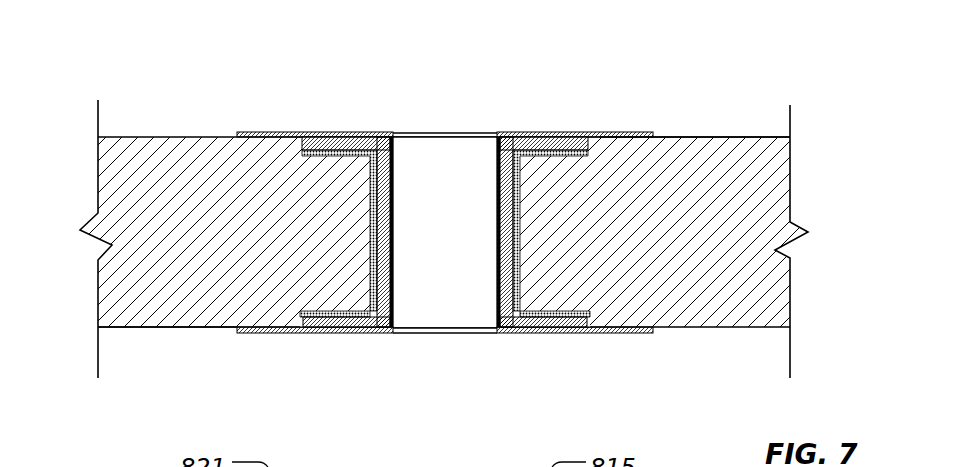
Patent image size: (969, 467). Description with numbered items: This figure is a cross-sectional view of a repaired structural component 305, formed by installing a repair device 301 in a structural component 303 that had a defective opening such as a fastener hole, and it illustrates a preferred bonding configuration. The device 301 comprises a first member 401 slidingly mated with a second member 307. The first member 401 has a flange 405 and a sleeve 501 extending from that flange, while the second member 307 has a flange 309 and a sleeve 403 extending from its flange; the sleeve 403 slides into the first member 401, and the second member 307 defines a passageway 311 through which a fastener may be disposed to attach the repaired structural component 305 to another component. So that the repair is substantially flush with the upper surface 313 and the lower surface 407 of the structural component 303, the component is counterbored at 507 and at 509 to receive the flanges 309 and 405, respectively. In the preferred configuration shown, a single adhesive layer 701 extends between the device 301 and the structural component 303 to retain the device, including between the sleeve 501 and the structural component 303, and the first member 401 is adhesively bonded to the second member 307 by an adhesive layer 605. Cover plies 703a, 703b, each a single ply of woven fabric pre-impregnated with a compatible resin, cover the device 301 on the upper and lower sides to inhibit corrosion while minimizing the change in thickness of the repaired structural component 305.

The repaired structural component 305 is at (484, 216).
The structural component 303 is at (205, 136).
The upper surface 313 is at (700, 137).
The lower surface 407 is at (205, 328).
The device 301 is at (429, 239).
The sleeve 403 is at (498, 214).
The passageway 311 is at (443, 312).
The second member 307 is at (378, 124).
The adhesive layer 701 is at (312, 166).
The sleeve 501 is at (372, 210).
The flange 309 is at (325, 133).
The flange 405 is at (335, 329).
The adhesive layer 605 is at (523, 182).
The first member 401 is at (548, 348).
The cover ply 703a is at (222, 132).
The counterbore 507 is at (562, 133).
The counterbore 509 is at (305, 334).
The cover ply 703b is at (598, 334).